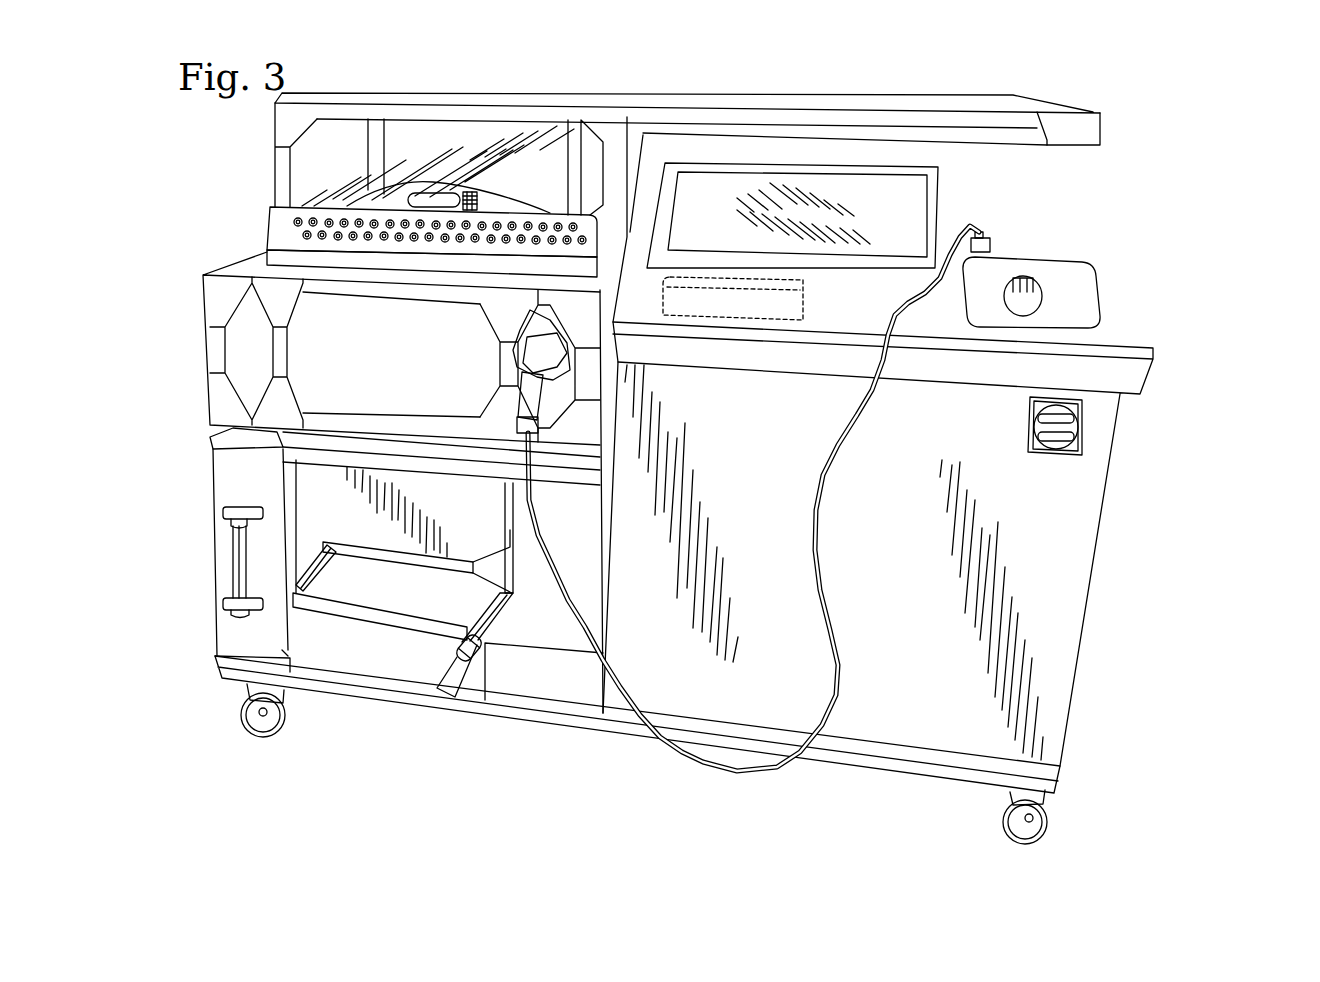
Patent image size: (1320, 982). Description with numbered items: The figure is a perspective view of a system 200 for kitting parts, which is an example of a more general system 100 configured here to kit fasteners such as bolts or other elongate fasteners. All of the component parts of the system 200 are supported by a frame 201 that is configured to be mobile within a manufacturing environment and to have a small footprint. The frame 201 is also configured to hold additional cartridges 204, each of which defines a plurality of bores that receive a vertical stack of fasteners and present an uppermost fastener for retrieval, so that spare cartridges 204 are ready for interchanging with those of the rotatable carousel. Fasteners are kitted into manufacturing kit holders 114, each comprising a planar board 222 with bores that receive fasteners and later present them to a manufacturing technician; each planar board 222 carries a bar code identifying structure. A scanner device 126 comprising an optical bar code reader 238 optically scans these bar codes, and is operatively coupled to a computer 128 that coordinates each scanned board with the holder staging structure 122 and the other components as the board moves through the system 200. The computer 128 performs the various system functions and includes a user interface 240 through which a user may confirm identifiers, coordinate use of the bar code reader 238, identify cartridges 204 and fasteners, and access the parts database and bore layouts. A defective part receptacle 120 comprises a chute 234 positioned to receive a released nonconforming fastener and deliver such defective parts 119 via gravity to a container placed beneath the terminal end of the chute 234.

The system 100 is at (1262, 84).
The system 200 is at (1208, 105).
The frame 201 is at (483, 100).
The manufacturing kit holder 114 is at (503, 194).
The planar board 222 is at (270, 227).
The holder staging structure 122 is at (203, 305).
The user interface 240 is at (953, 203).
The computer 128 is at (808, 303).
The scanner device 126 is at (512, 376).
The optical bar code reader 238 is at (514, 412).
The cartridge 204 is at (213, 542).
The defective part 119 is at (474, 636).
The defective part receptacle 120 is at (437, 665).
The chute 234 is at (475, 676).